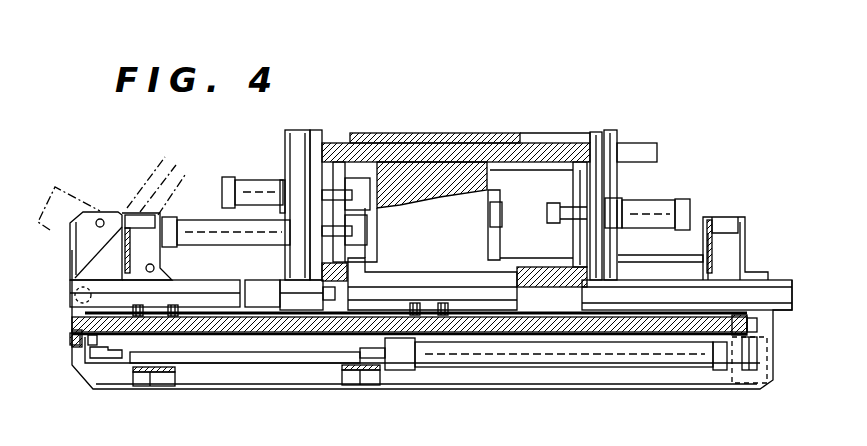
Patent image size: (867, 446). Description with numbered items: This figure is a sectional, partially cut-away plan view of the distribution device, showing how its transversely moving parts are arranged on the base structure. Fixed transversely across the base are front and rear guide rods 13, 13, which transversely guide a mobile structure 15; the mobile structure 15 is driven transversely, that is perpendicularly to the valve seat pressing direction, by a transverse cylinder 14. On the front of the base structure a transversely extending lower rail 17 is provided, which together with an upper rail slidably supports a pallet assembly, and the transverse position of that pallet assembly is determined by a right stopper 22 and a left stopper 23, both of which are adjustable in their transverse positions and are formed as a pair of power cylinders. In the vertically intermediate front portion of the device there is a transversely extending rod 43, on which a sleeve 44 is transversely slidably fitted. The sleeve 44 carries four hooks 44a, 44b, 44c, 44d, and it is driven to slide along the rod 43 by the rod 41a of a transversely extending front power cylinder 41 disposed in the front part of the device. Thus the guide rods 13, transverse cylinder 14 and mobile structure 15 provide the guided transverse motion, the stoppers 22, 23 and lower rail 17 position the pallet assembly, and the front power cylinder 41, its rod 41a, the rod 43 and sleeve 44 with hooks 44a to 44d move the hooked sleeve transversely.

The guide rod 13 is at (556, 144).
The transverse cylinder 14 is at (203, 228).
The mobile structure 15 is at (466, 140).
The lower rail 17 is at (518, 300).
The right stopper 22 is at (256, 190).
The left stopper 23 is at (656, 212).
The front power cylinder 41 is at (448, 364).
The rod 41a is at (118, 357).
The rod 43 is at (582, 337).
The sleeve 44 is at (240, 338).
The hook 44a is at (136, 306).
The hook 44b is at (172, 306).
The hook 44c is at (416, 303).
The hook 44d is at (444, 303).